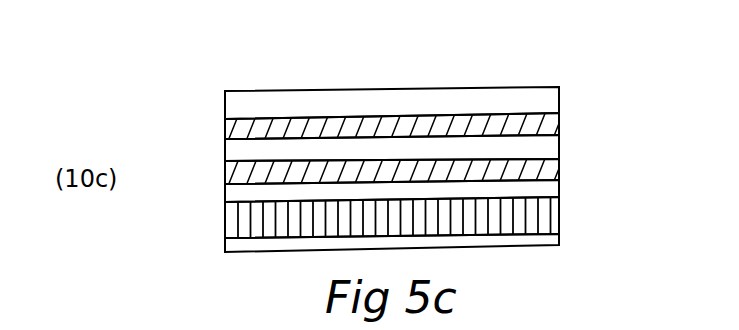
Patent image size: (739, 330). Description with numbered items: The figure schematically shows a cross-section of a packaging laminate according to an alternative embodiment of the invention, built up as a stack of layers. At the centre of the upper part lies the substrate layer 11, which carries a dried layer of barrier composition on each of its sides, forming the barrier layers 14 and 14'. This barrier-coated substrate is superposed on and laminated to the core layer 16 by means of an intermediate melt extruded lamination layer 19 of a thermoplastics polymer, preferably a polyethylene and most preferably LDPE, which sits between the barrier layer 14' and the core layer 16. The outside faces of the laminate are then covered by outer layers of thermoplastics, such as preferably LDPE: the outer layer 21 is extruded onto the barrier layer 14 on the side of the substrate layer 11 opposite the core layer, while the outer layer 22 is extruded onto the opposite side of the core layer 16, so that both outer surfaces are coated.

The outer layer of thermoplastics 21 is at (559, 89).
The layer of barrier composition 14 is at (427, 113).
The substrate layer 11 is at (559, 150).
The layer of barrier composition 14' is at (436, 172).
The intermediate melt extruded lamination layer 19 is at (560, 185).
The core layer 16 is at (560, 218).
The outer layer of thermoplastics 22 is at (560, 243).